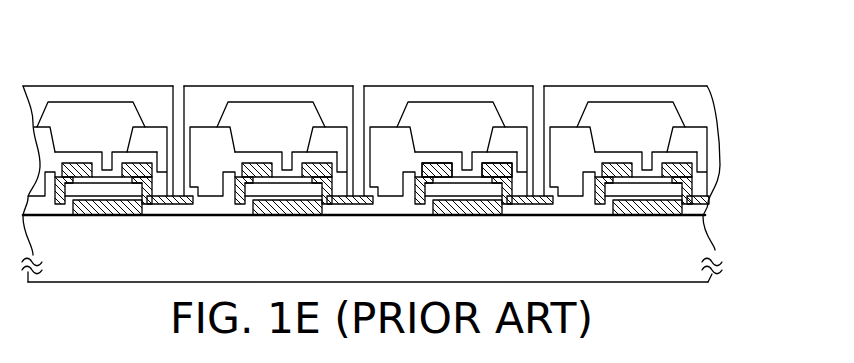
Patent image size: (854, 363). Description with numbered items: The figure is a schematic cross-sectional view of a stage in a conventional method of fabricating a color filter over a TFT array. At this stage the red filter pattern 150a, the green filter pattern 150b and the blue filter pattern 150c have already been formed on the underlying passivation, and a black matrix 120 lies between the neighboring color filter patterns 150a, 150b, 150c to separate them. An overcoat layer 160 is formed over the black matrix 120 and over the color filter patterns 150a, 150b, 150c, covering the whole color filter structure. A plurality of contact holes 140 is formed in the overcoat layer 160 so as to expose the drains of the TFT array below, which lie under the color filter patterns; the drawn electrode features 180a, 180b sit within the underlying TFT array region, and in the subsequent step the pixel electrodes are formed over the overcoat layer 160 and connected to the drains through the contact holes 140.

The black matrix 120 is at (272, 112).
The contact hole 140 is at (538, 93).
The red filter pattern 150a is at (215, 135).
The green filter pattern 150b is at (382, 137).
The blue filter pattern 150c is at (560, 137).
The overcoat layer 160 is at (110, 92).
The first electrode 180a is at (430, 165).
The second electrode 180b is at (497, 165).